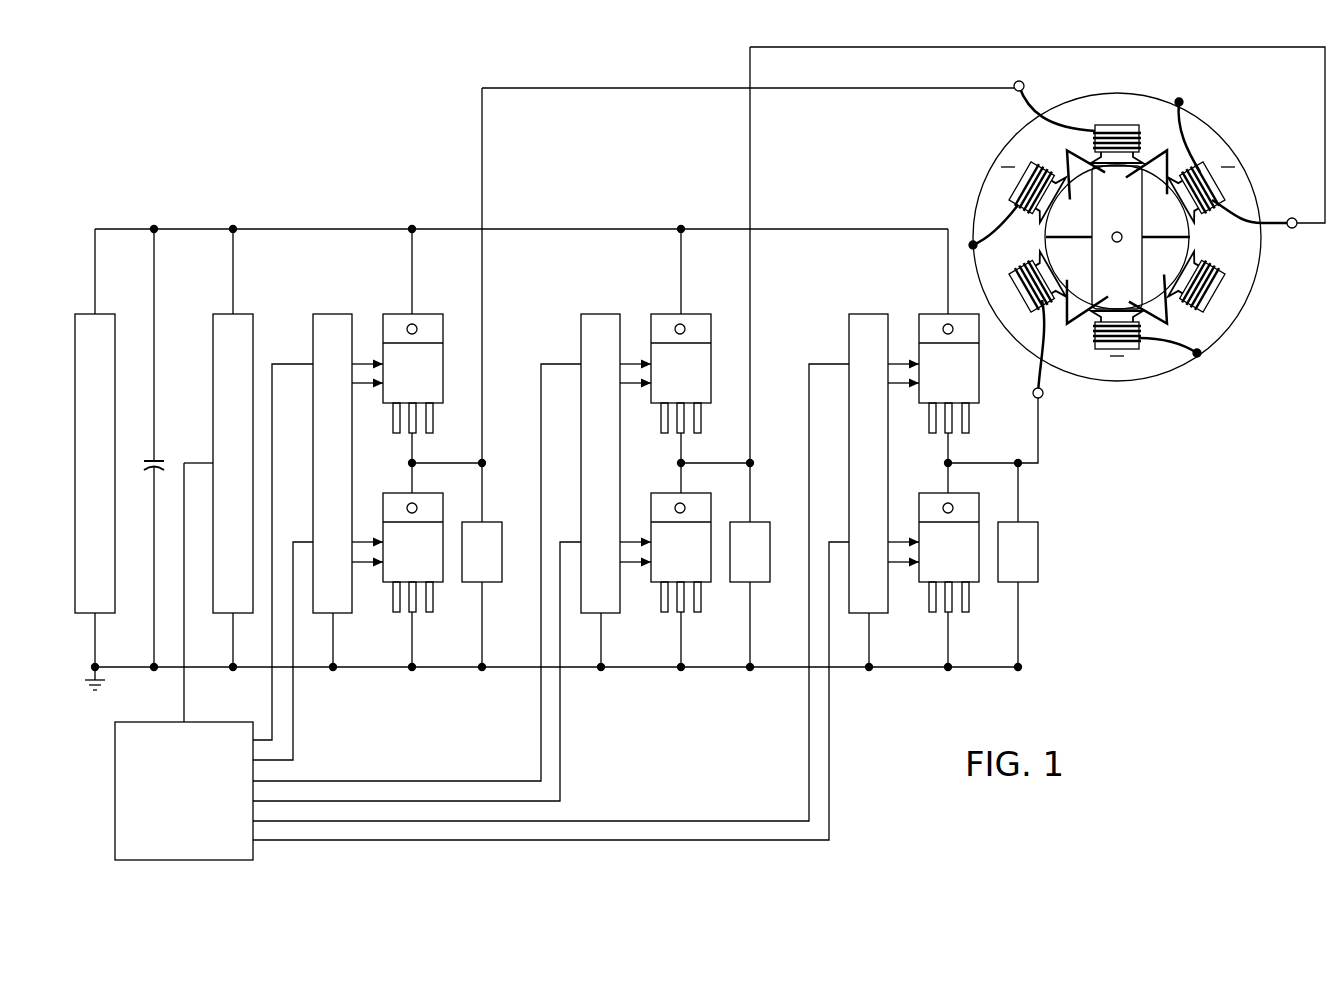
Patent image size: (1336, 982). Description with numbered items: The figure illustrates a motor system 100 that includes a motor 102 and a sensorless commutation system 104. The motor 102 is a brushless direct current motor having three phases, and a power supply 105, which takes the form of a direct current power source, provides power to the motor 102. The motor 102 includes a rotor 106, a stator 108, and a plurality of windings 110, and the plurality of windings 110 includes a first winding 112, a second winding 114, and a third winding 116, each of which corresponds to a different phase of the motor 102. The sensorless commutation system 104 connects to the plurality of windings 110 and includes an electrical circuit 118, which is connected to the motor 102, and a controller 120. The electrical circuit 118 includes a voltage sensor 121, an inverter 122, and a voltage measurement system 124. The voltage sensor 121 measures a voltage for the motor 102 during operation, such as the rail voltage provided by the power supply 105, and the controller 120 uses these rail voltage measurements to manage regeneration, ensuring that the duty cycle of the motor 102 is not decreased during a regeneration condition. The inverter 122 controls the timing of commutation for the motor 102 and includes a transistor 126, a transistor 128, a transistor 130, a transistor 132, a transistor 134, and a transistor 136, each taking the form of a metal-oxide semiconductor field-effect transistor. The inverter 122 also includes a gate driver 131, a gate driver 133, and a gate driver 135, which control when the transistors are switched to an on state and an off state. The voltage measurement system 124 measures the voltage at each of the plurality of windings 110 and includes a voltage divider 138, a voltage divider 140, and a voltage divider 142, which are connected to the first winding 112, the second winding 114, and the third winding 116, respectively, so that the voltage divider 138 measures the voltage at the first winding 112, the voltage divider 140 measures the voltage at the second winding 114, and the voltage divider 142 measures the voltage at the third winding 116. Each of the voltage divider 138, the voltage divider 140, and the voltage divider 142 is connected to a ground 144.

The motor system 100 is at (234, 104).
The motor 102 is at (1145, 249).
The sensorless commutation system 104 is at (368, 208).
The power supply 105 is at (80, 314).
The rotor 106 is at (1217, 218).
The stator 108 is at (1121, 236).
The plurality of windings 110 is at (1222, 336).
The first winding 112 is at (1128, 127).
The second winding 114 is at (1020, 165).
The third winding 116 is at (1222, 162).
The electrical circuit 118 is at (393, 377).
The controller 120 is at (482, 612).
The voltage sensor 121 is at (224, 314).
The inverter 122 is at (682, 357).
The voltage measurement system 124 is at (494, 597).
The transistor 126 is at (402, 314).
The transistor 128 is at (394, 493).
The transistor 130 is at (670, 314).
The gate driver 131 is at (330, 314).
The transistor 132 is at (662, 493).
The gate driver 133 is at (598, 314).
The transistor 134 is at (938, 314).
The gate driver 135 is at (866, 314).
The transistor 136 is at (930, 493).
The voltage divider 138 is at (472, 583).
The voltage divider 140 is at (752, 583).
The voltage divider 142 is at (1040, 552).
The ground 144 is at (109, 687).